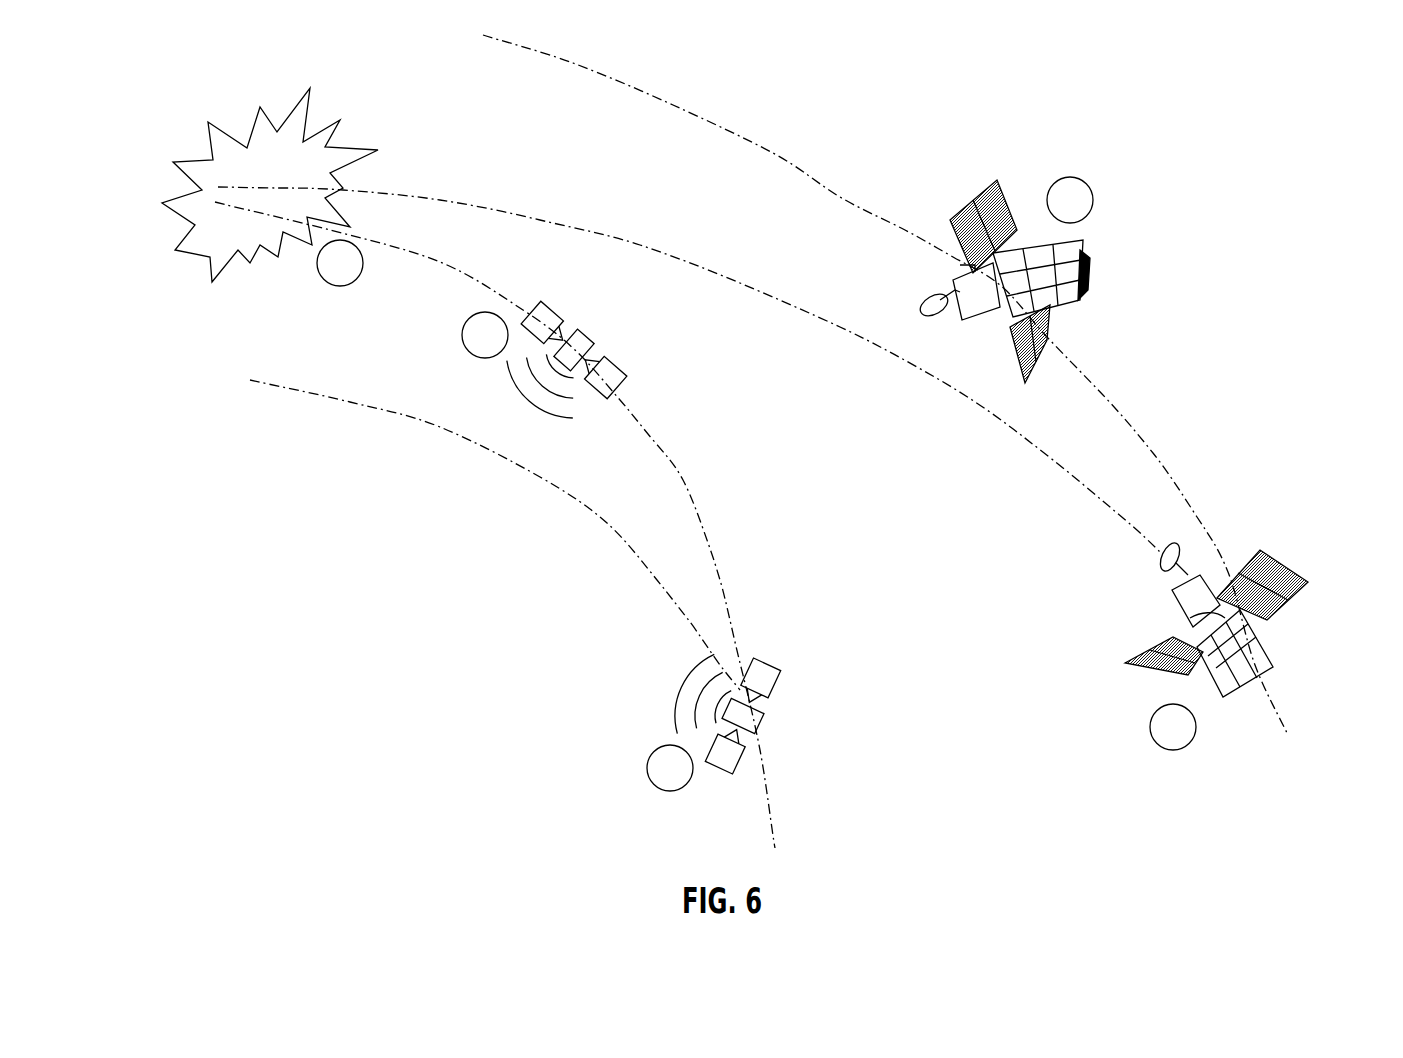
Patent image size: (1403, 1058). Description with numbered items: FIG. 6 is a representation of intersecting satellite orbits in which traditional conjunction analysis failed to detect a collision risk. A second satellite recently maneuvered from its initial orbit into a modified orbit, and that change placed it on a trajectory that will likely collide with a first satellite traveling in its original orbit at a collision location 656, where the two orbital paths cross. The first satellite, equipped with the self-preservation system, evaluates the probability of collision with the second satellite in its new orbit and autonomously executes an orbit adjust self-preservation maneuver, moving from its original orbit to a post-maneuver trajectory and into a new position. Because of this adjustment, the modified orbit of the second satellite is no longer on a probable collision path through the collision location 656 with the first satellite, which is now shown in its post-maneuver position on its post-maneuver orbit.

The collision location 656 is at (190, 158).